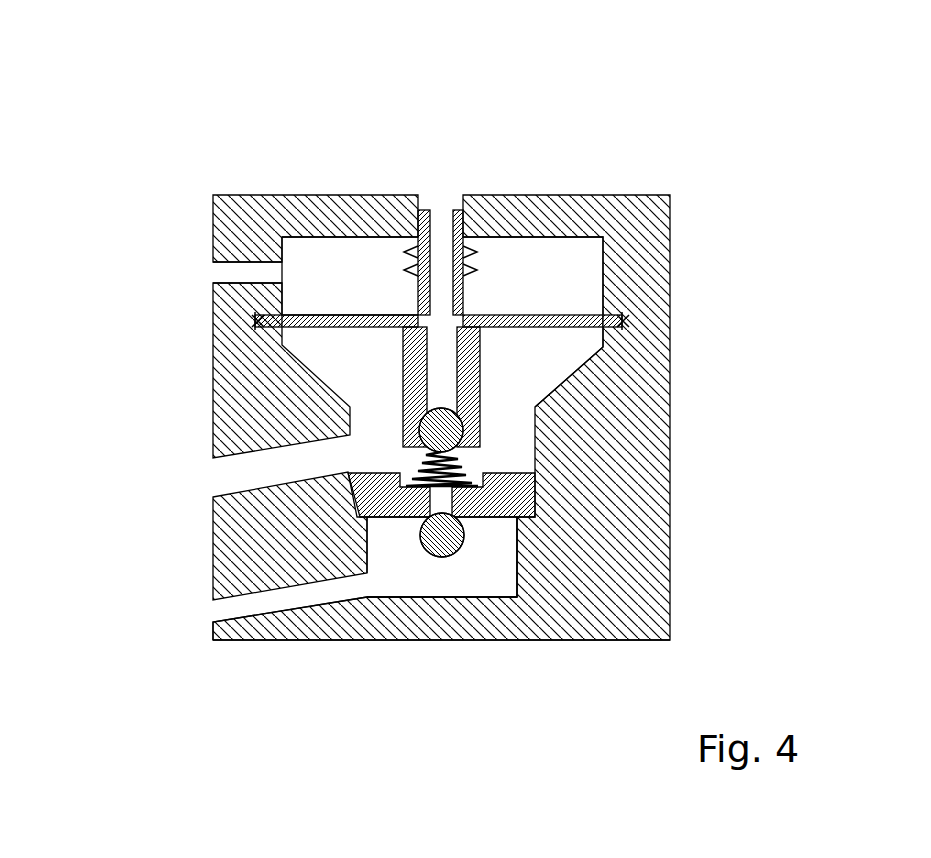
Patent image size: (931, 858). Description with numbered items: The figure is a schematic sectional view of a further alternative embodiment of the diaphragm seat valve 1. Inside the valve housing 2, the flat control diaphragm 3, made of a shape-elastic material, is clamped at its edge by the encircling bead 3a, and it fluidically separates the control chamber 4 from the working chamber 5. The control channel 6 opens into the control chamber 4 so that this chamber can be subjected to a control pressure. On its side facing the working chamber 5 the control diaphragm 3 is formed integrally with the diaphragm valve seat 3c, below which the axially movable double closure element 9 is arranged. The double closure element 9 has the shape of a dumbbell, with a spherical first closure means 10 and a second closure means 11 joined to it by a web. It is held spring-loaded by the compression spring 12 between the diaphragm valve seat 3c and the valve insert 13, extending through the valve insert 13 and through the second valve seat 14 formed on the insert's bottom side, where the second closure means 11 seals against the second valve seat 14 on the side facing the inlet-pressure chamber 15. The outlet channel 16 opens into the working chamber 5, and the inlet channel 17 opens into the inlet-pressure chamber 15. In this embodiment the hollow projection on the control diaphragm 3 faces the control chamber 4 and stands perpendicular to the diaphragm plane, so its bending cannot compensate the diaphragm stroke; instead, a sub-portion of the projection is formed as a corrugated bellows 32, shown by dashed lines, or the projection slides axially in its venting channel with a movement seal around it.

The diaphragm seat valve 1 is at (200, 180).
The valve housing 2 is at (650, 247).
The control diaphragm 3 is at (563, 312).
The encircling bead 3a is at (258, 321).
The diaphragm valve seat 3c is at (480, 405).
The control chamber 4 is at (325, 277).
The working chamber 5 is at (535, 357).
The control channel 6 is at (238, 276).
The double closure element 9 is at (520, 517).
The first closure means 10 is at (403, 420).
The second closure means 11 is at (464, 550).
The compression spring 12 is at (470, 463).
The valve insert 13 is at (505, 483).
The second valve seat 14 is at (417, 523).
The inlet-pressure chamber 15 is at (470, 580).
The outlet channel 16 is at (252, 468).
The inlet channel 17 is at (227, 640).
The corrugated bellows 32 is at (407, 242).